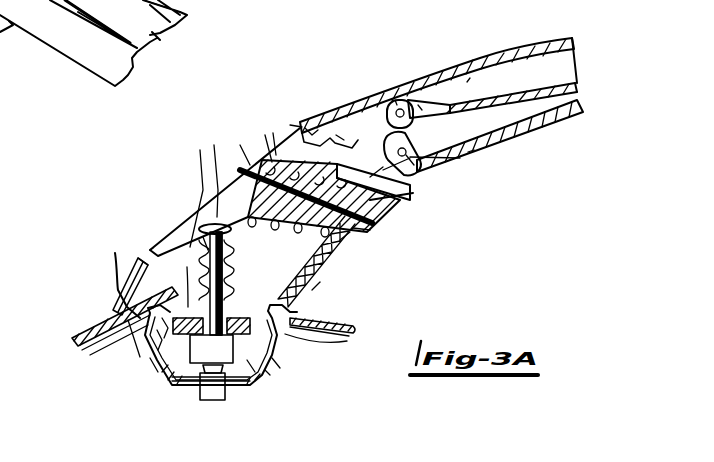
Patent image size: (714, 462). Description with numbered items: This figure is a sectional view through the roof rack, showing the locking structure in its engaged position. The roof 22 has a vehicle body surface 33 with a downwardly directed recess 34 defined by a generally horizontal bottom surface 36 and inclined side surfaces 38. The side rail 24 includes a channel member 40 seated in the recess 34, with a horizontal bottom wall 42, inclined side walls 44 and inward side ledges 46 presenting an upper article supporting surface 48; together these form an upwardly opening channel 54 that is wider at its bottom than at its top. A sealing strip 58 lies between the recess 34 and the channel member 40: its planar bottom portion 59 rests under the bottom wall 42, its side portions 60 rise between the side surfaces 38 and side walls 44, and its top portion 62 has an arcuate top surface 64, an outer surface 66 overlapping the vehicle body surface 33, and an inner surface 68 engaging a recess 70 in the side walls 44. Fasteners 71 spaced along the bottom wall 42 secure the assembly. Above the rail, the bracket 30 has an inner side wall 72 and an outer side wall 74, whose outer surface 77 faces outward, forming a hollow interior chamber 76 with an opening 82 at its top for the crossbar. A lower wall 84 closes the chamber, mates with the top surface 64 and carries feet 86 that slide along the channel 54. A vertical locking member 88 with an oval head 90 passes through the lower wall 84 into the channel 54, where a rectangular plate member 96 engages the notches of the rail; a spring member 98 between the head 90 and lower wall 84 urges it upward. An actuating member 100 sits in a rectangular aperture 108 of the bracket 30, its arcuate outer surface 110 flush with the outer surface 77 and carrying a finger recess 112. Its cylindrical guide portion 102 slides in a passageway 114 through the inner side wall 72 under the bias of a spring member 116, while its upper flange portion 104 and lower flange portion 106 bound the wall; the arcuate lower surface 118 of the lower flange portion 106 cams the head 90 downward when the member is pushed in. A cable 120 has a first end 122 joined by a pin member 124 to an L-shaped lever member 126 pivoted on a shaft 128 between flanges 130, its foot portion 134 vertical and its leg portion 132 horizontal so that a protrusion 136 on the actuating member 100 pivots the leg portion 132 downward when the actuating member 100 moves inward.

The roof 22 is at (353, 325).
The side rail 24 is at (93, 383).
The bracket 30 is at (363, 95).
The vehicle body surface 33 is at (318, 315).
The recess 34 is at (270, 375).
The bottom surface 36 is at (247, 384).
The side surface 38 is at (140, 342).
The channel member 40 is at (162, 372).
The bottom wall 42 is at (177, 384).
The side wall 44 is at (150, 358).
The side ledge 46 is at (193, 297).
The upper article supporting surface 48 is at (237, 290).
The channel 54 is at (153, 32).
The sealing strip 58 is at (255, 380).
The bottom portion 59 is at (235, 390).
The side portion 60 is at (293, 335).
The top portion 62 is at (305, 300).
The top surface 64 is at (314, 290).
The outer surface 66 is at (349, 332).
The inner surface 68 is at (345, 240).
The recess 70 is at (127, 323).
The fastener 71 is at (205, 392).
The inner side wall 72 is at (455, 159).
The outer side wall 74 is at (308, 128).
The interior chamber 76 is at (467, 82).
The outer surface 77 is at (340, 135).
The opening 82 is at (572, 62).
The lower wall 84 is at (115, 253).
The foot 86 is at (185, 385).
The locking member 88 is at (208, 250).
The head 90 is at (217, 237).
The plate member 96 is at (168, 380).
The spring member 98 is at (240, 278).
The actuating member 100 is at (240, 145).
The guide portion 102 is at (392, 206).
The upper flange portion 104 is at (273, 133).
The lower flange portion 106 is at (153, 248).
The aperture 108 is at (290, 125).
The outer surface 110 is at (265, 135).
The recess 112 is at (200, 150).
The passageway 114 is at (413, 193).
The spring member 116 is at (370, 230).
The lower surface 118 is at (214, 145).
The cable 120 is at (513, 90).
The first end 122 is at (420, 108).
The pin member 124 is at (395, 103).
The lever member 126 is at (417, 122).
The shaft 128 is at (414, 177).
The flange 130 is at (470, 152).
The leg portion 132 is at (367, 150).
The foot portion 134 is at (450, 128).
The protrusion 136 is at (352, 133).